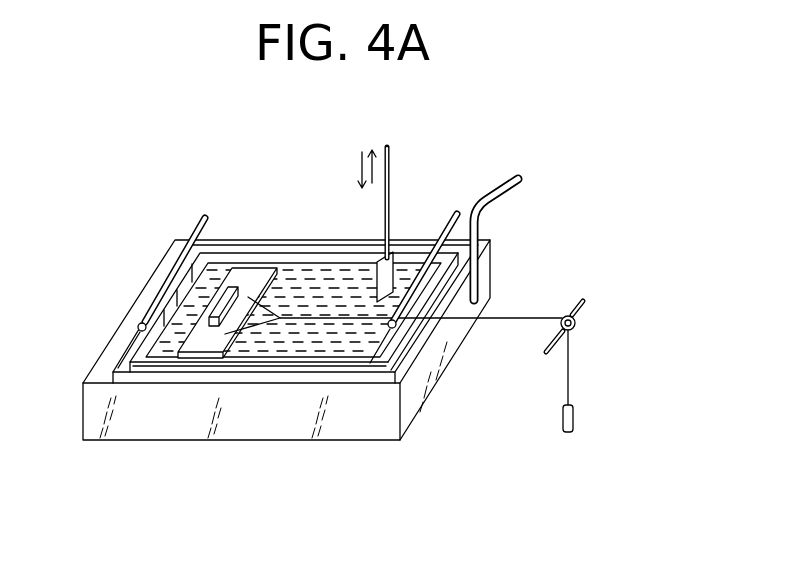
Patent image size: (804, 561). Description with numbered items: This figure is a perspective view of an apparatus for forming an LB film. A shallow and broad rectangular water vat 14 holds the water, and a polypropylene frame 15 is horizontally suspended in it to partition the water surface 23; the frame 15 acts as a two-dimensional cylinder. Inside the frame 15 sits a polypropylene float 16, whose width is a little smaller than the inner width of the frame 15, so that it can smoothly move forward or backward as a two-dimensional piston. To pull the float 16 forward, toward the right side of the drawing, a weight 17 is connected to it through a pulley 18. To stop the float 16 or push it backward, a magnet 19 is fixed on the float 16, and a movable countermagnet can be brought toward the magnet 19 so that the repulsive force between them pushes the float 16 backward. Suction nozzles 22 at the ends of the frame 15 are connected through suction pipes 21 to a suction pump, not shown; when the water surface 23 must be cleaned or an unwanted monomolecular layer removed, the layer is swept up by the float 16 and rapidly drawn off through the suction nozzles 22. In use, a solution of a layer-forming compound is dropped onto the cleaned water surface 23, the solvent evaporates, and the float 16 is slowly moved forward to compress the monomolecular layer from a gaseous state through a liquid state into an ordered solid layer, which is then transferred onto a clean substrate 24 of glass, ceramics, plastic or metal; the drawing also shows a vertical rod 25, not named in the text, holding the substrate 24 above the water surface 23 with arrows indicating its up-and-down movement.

The water vat 14 is at (295, 420).
The polypropylene frame 15 is at (123, 362).
The polypropylene float 16 is at (258, 270).
The weight 17 is at (576, 416).
The pulley 18 is at (578, 322).
The magnet 19 is at (233, 293).
The suction pipe 21 is at (449, 228).
The suction nozzle 22 is at (157, 312).
The water surface 23 is at (378, 347).
The substrate 24 is at (396, 254).
The vertical rod 25 is at (389, 154).